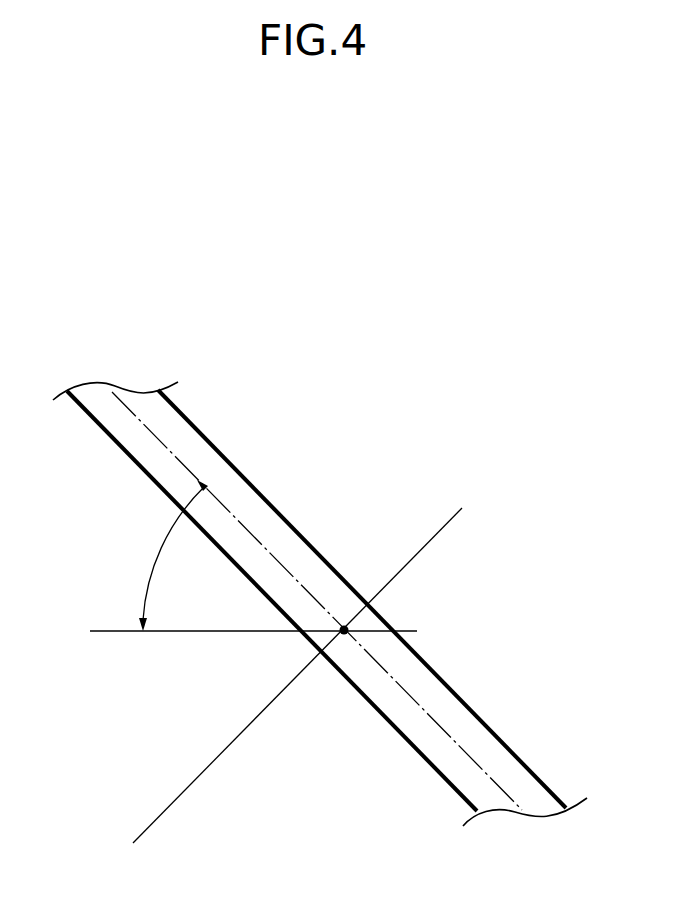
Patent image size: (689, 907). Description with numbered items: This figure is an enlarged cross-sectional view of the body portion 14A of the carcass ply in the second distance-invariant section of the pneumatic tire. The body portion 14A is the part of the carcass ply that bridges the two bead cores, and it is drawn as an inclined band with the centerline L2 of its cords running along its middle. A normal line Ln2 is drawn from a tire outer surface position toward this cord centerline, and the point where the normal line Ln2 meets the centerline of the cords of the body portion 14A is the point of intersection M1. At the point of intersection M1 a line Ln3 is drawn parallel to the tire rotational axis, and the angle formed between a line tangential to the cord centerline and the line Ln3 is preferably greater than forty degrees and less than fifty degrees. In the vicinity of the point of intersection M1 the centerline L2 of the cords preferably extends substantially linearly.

The body portion 14A is at (273, 503).
The centerline of the cords L2 is at (305, 578).
The line parallel to the tire rotational axis Ln3 is at (109, 633).
The normal line Ln2 is at (192, 785).
The point of intersection M1 is at (344, 634).